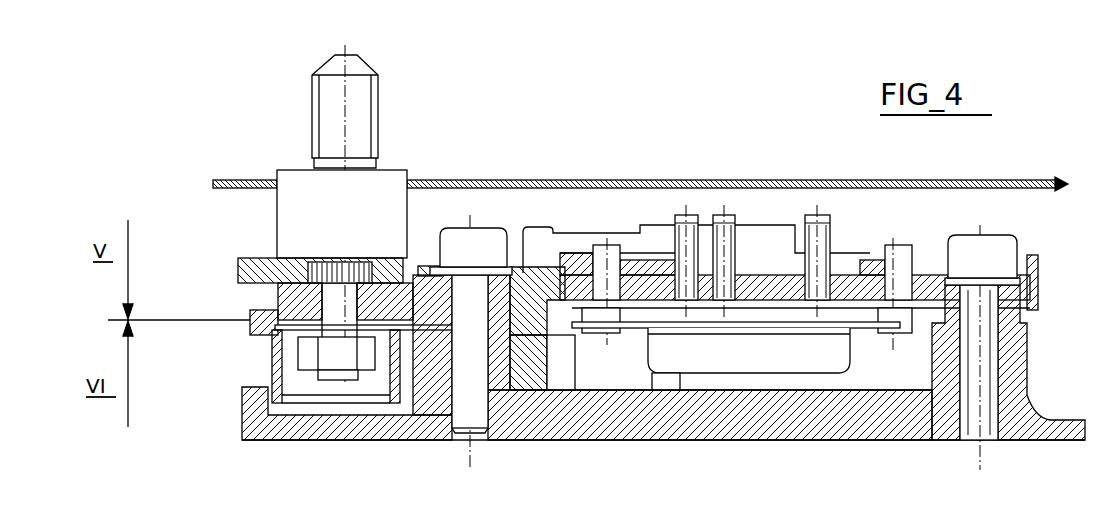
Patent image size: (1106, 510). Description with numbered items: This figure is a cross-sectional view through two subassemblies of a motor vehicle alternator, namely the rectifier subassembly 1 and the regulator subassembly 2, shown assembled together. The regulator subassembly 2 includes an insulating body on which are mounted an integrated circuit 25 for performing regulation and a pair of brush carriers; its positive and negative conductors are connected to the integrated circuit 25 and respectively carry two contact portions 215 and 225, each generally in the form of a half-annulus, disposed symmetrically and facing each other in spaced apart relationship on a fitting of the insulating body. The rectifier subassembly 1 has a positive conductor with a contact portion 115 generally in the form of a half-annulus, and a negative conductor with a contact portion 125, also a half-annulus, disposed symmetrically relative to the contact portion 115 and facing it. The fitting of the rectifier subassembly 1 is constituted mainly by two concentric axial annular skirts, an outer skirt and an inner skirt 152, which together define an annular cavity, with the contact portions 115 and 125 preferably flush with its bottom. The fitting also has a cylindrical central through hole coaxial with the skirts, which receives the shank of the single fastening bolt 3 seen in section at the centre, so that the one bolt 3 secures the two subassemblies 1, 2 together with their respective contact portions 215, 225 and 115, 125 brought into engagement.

The rectifier subassembly 1 is at (266, 363).
The regulator subassembly 2 is at (661, 232).
The fastening bolt 3 is at (460, 238).
The integrated circuit 25 is at (792, 356).
The contact portion 115 is at (442, 335).
The contact portion 125 is at (513, 348).
The inner skirt 152 is at (480, 290).
The contact portion 215 is at (421, 264).
The contact portion 225 is at (516, 335).